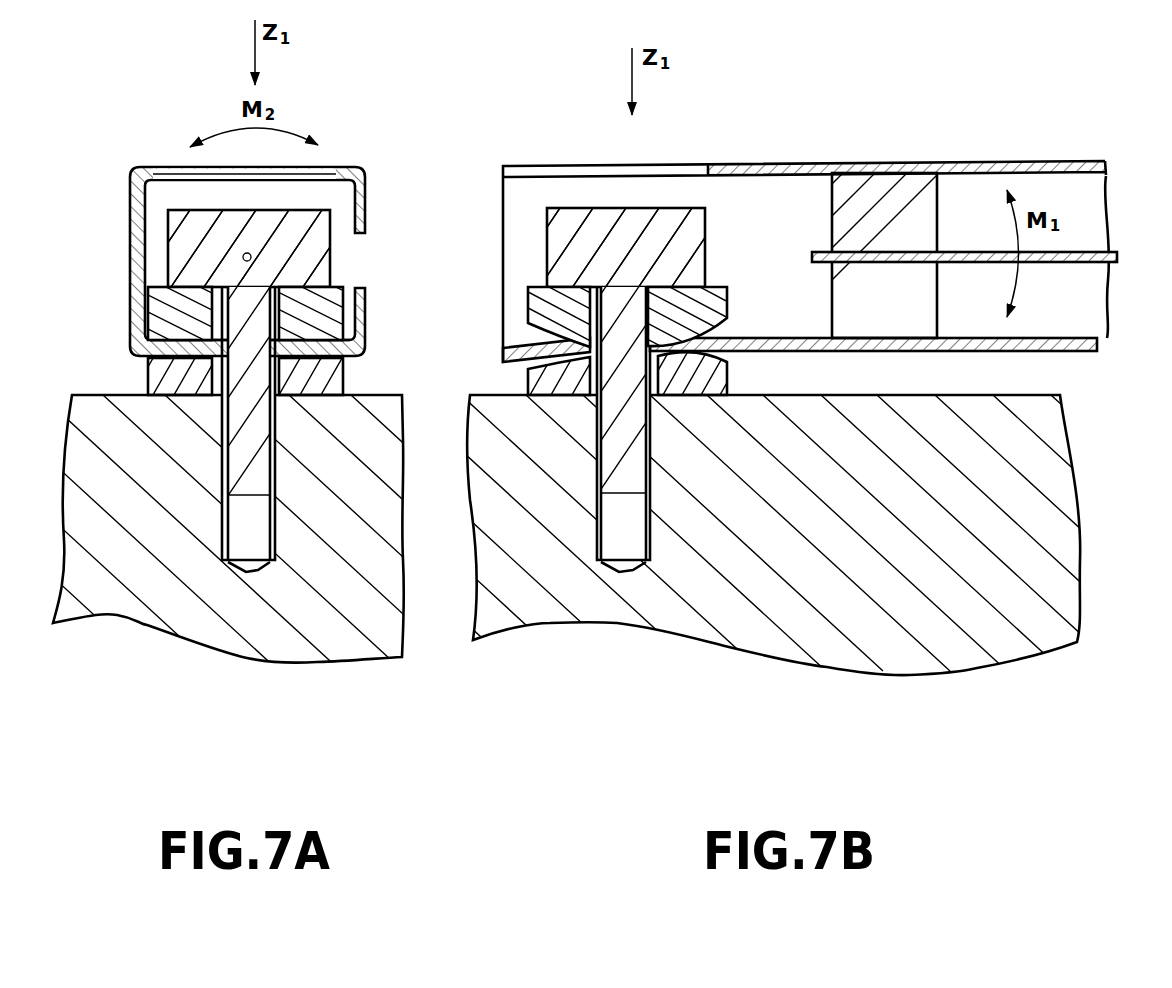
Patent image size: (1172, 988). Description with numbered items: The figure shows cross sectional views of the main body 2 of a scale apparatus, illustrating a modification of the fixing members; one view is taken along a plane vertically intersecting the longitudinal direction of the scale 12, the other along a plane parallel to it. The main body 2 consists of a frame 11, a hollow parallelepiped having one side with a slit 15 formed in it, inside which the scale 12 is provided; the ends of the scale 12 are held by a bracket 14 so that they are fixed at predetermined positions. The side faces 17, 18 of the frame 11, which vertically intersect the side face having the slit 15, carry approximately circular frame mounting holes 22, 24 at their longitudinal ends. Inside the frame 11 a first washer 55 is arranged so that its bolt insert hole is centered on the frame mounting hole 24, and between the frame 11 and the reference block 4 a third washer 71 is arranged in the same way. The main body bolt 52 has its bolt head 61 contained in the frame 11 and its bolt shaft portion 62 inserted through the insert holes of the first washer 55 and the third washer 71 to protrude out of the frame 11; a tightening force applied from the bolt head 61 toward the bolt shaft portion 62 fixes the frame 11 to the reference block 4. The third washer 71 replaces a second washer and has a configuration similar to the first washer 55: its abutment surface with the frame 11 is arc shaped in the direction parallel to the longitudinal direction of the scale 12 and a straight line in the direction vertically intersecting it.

In FIG. 7A, the main body 2 is at (208, 116).
In FIG. 7B, the main body 2 is at (912, 118).
In FIG. 7A, the reference block 4 is at (253, 636).
In FIG. 7B, the reference block 4 is at (655, 620).
In FIG. 7A, the frame 11 is at (128, 183).
In FIG. 7B, the frame 11 is at (1018, 161).
In FIG. 7A, the scale 12 is at (243, 257).
In FIG. 7B, the scale 12 is at (1085, 247).
In FIG. 7B, the bracket 14 is at (937, 222).
In FIG. 7A, the slit 15 is at (352, 266).
In FIG. 7B, the side face 17 is at (1058, 149).
In FIG. 7B, the side face 18 is at (1020, 351).
In FIG. 7A, the frame mounting hole 22 is at (330, 171).
In FIG. 7B, the frame mounting hole 22 is at (547, 163).
In FIG. 7A, the frame mounting hole 24 is at (290, 362).
In FIG. 7B, the frame mounting hole 24 is at (530, 383).
In FIG. 7A, the main body bolt 52 is at (274, 210).
In FIG. 7B, the main body bolt 52 is at (681, 199).
In FIG. 7A, the first washer 55 is at (158, 298).
In FIG. 7B, the first washer 55 is at (728, 297).
In FIG. 7A, the bolt head 61 is at (203, 208).
In FIG. 7B, the bolt head 61 is at (648, 207).
In FIG. 7A, the bolt shaft portion 62 is at (254, 432).
In FIG. 7B, the bolt shaft portion 62 is at (620, 458).
In FIG. 7A, the third washer 71 is at (158, 373).
In FIG. 7B, the third washer 71 is at (733, 352).